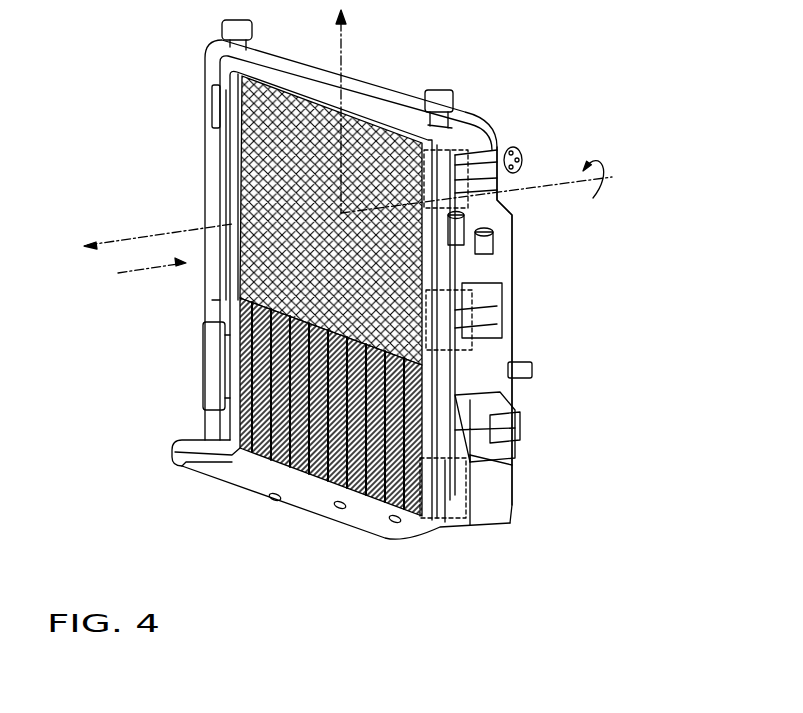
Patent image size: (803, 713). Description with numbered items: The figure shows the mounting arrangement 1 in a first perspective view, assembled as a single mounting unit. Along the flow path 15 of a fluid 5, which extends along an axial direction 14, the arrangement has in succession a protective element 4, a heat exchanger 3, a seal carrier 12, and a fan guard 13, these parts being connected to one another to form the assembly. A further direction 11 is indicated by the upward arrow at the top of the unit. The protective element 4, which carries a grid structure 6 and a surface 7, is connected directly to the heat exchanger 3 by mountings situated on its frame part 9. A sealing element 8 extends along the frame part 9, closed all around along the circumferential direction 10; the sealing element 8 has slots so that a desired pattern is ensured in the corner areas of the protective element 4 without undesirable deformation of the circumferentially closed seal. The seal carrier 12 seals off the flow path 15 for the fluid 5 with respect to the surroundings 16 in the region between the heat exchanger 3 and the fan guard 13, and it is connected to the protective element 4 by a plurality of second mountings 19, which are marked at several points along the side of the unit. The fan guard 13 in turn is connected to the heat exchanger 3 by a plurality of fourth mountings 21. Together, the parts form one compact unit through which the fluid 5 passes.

The mounting arrangement 1 is at (507, 105).
The heat exchanger 3 is at (512, 457).
The protective element 4 is at (238, 357).
The fluid 5 is at (121, 276).
The grid structure 6 is at (287, 450).
The surface 7 is at (245, 136).
The sealing element 8 is at (213, 168).
The frame part 9 is at (226, 205).
The circumferential direction 10 is at (596, 191).
The vertical axis 11 is at (342, 58).
The seal carrier 12 is at (490, 513).
The fan guard 13 is at (515, 297).
The axial direction 14 is at (112, 243).
The flow path 15 is at (156, 272).
The surroundings 16 is at (401, 575).
The second mountings 19 is at (442, 188).
The fourth mountings 21 is at (520, 256).